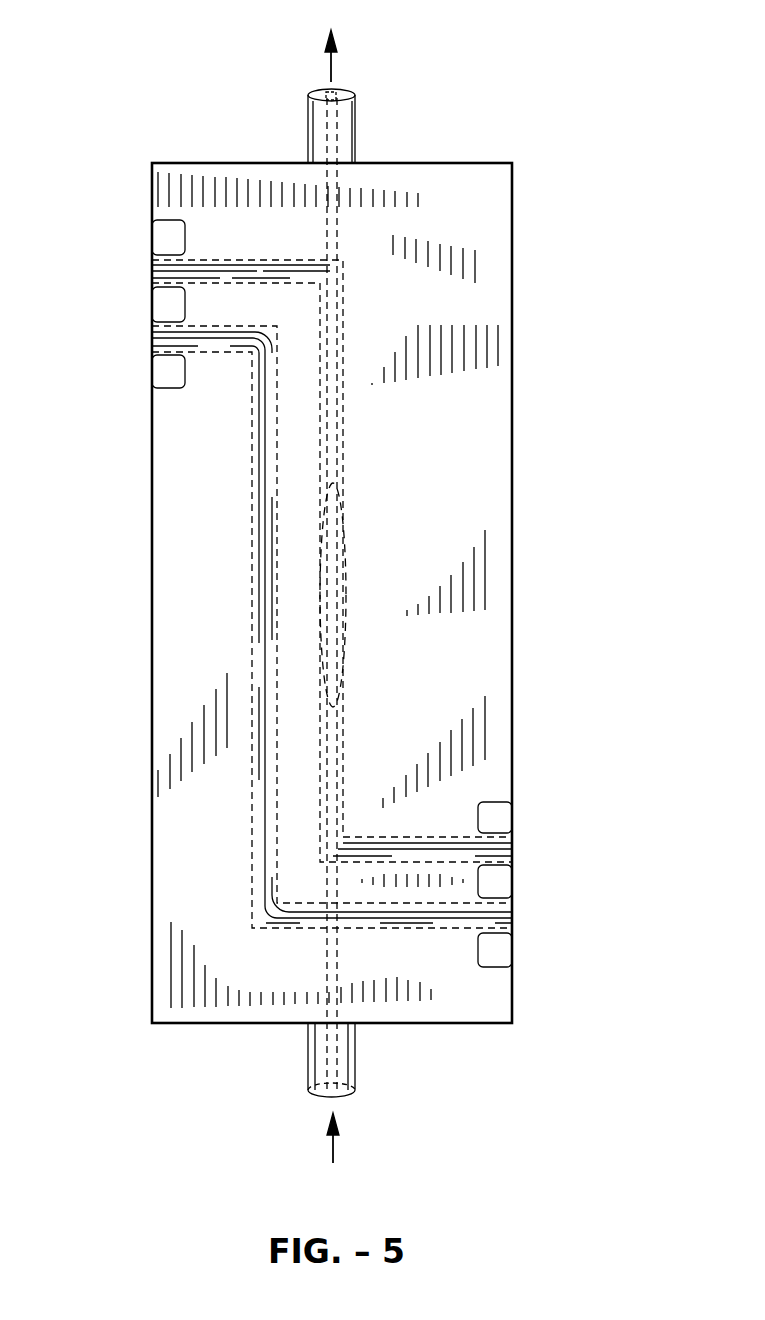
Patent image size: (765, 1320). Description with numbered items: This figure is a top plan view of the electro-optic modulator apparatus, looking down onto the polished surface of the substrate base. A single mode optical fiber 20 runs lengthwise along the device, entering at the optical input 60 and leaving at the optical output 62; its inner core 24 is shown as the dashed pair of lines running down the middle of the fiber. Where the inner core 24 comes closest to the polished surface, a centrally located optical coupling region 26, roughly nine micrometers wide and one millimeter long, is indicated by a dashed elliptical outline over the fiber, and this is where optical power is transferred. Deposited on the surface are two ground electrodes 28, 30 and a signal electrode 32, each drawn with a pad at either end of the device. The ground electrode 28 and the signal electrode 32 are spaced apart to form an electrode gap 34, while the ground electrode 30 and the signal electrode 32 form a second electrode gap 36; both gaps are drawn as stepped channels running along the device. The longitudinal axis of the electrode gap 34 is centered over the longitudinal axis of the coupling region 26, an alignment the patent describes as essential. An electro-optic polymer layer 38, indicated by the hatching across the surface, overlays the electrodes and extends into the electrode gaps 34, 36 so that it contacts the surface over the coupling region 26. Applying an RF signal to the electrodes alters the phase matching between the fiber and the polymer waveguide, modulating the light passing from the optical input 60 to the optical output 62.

The single mode optical fiber 20 is at (357, 127).
The inner core 24 is at (325, 1050).
The optical coupling region 26 is at (347, 505).
The ground electrode 28 is at (163, 240).
The ground electrode 30 is at (165, 374).
The signal electrode 32 is at (163, 312).
The electrode gap 34 is at (322, 312).
The electrode gap 36 is at (270, 448).
The electro-optic polymer layer 38 is at (480, 390).
The optical input 60 is at (337, 1156).
The optical output 62 is at (334, 41).